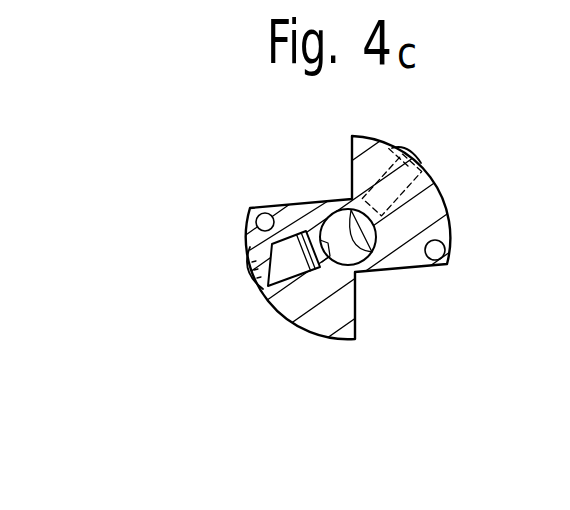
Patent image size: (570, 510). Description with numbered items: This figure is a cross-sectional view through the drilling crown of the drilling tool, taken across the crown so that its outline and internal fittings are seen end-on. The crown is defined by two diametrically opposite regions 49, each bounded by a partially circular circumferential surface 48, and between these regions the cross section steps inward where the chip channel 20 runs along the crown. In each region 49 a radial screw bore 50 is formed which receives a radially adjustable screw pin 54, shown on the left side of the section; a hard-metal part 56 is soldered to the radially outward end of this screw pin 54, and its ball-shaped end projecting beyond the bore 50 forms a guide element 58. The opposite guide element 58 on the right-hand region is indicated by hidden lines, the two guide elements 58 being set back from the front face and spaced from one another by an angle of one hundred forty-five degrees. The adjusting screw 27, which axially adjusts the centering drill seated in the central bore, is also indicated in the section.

The chip channel 20 is at (315, 185).
The adjusting screw 27 is at (450, 200).
The partially circular circumferential surface 48 is at (317, 342).
The region 49 is at (307, 303).
The screw bore 50 is at (250, 261).
The screw pin 54 is at (267, 282).
The hard-metal part 56 is at (250, 262).
The guide element 58 is at (417, 157).